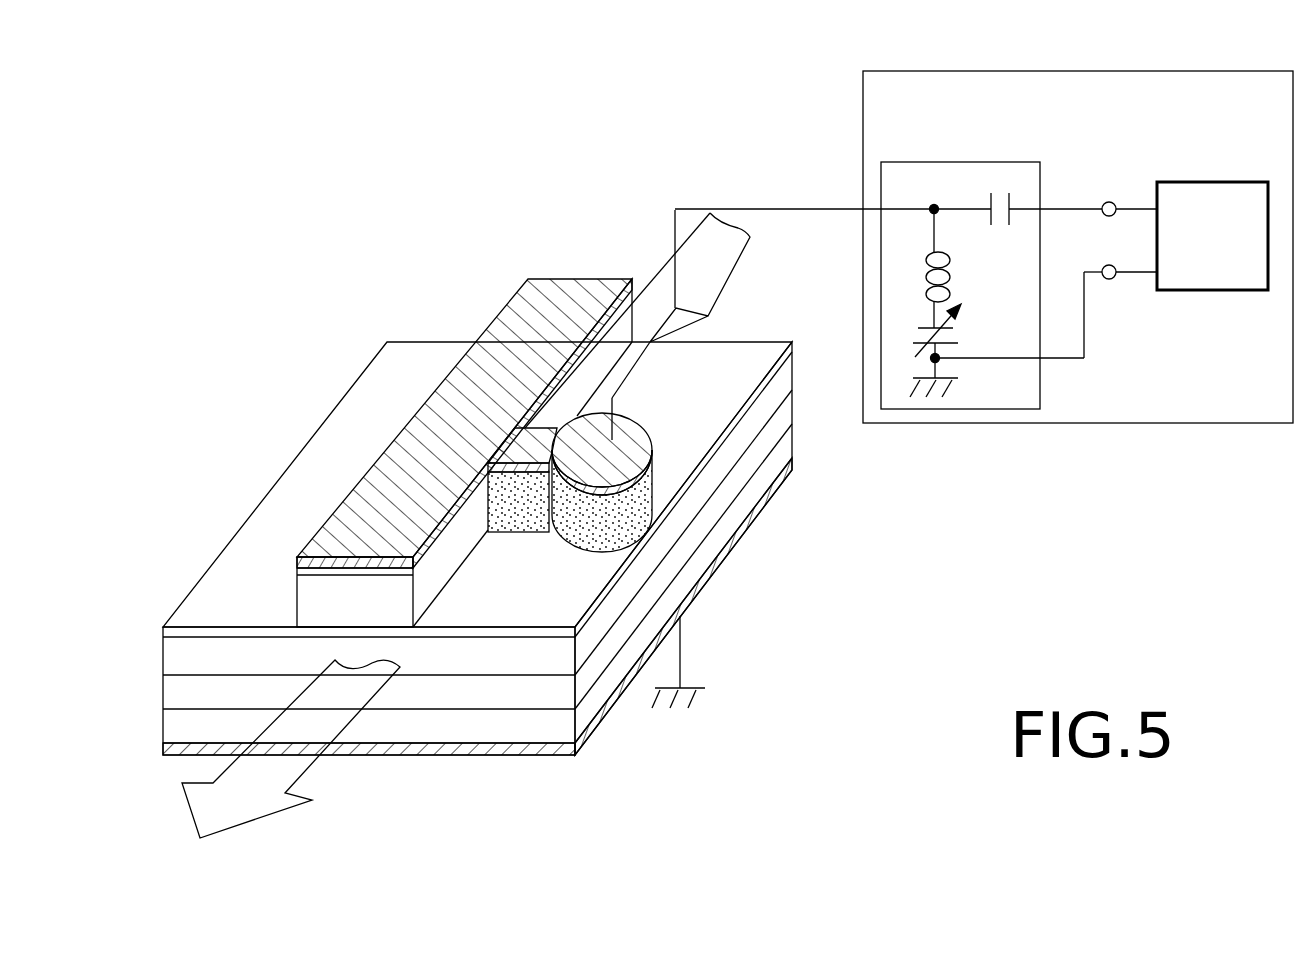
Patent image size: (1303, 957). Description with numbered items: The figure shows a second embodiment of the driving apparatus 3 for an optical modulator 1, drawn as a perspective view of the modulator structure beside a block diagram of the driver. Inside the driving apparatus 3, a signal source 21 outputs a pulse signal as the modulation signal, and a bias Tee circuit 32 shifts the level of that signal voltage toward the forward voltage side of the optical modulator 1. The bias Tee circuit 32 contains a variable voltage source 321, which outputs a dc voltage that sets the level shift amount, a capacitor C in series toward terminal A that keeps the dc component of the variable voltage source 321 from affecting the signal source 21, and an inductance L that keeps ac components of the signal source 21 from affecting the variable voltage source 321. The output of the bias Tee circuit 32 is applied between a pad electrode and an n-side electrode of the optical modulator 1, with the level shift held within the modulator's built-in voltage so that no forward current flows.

The optical modulator 1 is at (812, 482).
The driving apparatus 3 is at (984, 247).
The bias Tee circuit 32 is at (971, 298).
The variable voltage source 321 is at (952, 344).
The signal source 21 is at (1202, 182).
The terminal A is at (1111, 221).
The inductance L is at (946, 296).
The capacitor C is at (998, 230).